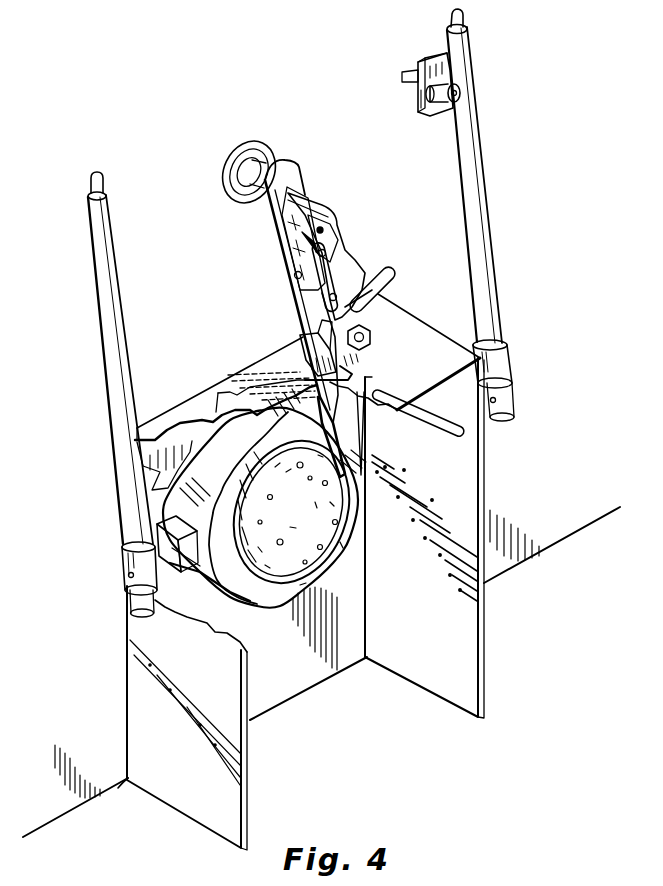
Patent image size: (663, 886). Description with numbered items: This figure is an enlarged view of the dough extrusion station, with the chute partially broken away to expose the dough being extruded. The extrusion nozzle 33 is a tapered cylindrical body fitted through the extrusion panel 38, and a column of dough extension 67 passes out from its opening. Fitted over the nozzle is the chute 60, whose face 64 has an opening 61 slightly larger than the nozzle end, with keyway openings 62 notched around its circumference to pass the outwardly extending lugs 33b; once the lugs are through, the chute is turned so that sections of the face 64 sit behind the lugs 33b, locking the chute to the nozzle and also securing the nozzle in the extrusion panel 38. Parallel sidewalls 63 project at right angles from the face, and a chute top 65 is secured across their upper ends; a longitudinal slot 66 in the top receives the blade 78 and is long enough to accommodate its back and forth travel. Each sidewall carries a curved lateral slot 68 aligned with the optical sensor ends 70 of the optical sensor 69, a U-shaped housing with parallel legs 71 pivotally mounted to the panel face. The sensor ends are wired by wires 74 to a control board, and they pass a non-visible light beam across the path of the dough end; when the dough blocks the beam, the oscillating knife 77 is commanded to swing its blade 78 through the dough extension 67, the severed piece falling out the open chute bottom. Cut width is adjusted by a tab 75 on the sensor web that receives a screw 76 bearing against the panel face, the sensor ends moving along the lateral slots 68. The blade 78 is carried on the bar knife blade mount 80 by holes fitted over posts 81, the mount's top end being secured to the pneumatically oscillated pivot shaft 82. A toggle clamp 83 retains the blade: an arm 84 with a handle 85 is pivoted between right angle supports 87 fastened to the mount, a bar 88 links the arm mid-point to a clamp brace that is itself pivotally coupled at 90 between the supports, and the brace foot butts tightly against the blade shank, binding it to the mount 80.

The extrusion nozzle 33 is at (255, 600).
The lugs 33b is at (166, 565).
The extrusion panel 38 is at (76, 706).
The chute 60 is at (485, 600).
The opening 61 is at (160, 514).
The keyway openings 62 is at (147, 466).
The sidewalls 63 is at (424, 583).
The face 64 is at (351, 598).
The chute top 65 is at (444, 371).
The longitudinal slot 66 is at (217, 393).
The dough extension 67 is at (319, 513).
The curved lateral slots 68 is at (466, 428).
The optical sensor 69 is at (522, 168).
The optical sensor ends 70 is at (513, 396).
The legs 71 is at (497, 258).
The wires 74 is at (101, 176).
The tab 75 is at (474, 68).
The screw 76 is at (479, 104).
The oscillating knife 77 is at (351, 208).
The blade 78 is at (361, 427).
The bar knife blade mount 80 is at (265, 228).
The posts 81 is at (306, 326).
The pivot shaft 82 is at (269, 160).
The toggle clamp 83 is at (271, 246).
The arm 84 is at (352, 260).
The handle 85 is at (390, 278).
The right angle supports 87 is at (312, 200).
The bar 88 is at (334, 264).
The pivot coupling 90 is at (372, 321).